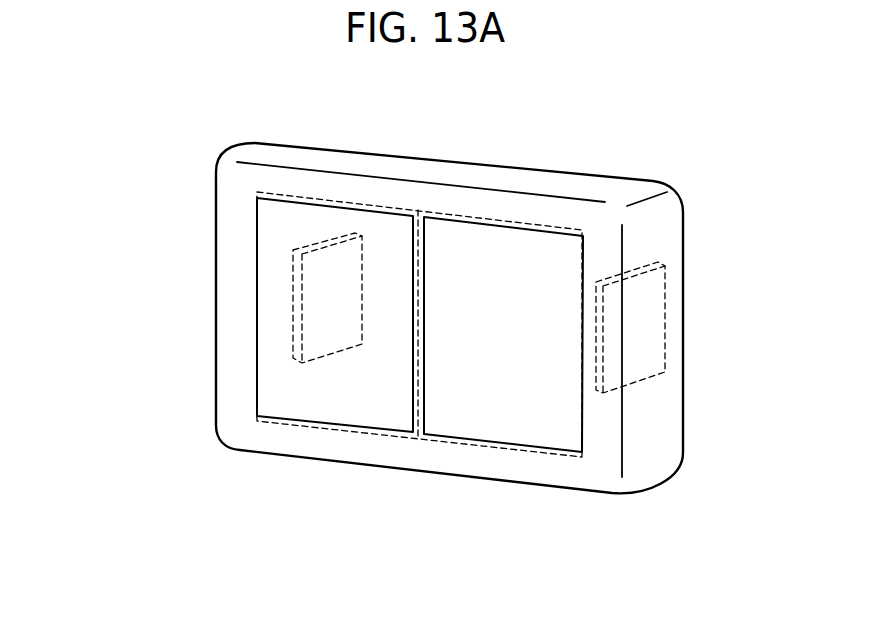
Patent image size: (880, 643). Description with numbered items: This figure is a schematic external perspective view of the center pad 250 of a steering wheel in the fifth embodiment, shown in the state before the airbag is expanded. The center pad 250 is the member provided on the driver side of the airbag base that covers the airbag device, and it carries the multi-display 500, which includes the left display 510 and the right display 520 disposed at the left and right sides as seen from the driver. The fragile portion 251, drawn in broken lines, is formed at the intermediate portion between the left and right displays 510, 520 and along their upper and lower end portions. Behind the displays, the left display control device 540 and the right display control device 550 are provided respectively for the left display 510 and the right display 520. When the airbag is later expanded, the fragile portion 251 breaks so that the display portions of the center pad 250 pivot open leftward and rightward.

The center pad 250 is at (180, 162).
The fragile portion 251 is at (351, 204).
The multi-display 500 is at (468, 316).
The left display 510 is at (382, 227).
The right display 520 is at (497, 247).
The left display control device 540 is at (293, 273).
The right display control device 550 is at (650, 302).